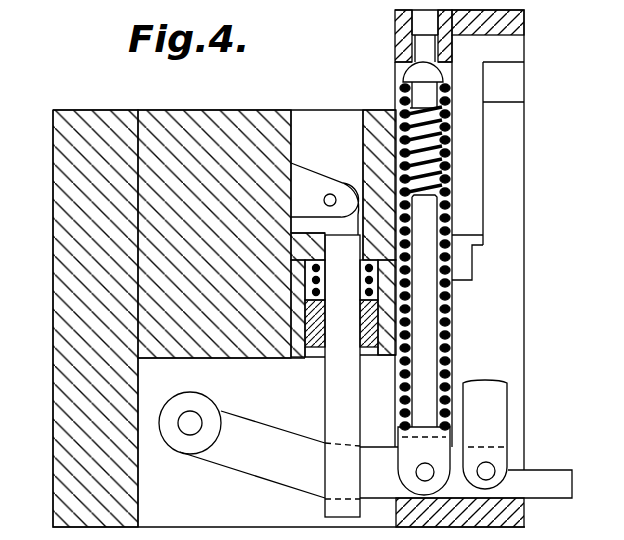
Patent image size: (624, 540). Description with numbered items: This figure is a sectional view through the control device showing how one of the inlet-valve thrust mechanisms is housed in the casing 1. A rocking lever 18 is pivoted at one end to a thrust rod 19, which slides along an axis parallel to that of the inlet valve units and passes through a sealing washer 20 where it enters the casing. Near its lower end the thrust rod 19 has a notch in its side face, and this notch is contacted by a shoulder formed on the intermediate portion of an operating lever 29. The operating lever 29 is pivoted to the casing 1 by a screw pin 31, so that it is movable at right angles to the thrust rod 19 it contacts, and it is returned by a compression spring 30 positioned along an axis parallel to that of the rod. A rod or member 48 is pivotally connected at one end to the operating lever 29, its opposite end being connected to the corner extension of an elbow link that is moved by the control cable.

The casing 1 is at (63, 260).
The rocking lever 18 is at (311, 185).
The thrust rod 19 is at (337, 372).
The sealing washer 20 is at (393, 307).
The operating lever 29 is at (251, 462).
The compression spring 30 is at (450, 342).
The screw pin 31 is at (190, 428).
The rod or member 48 is at (490, 408).